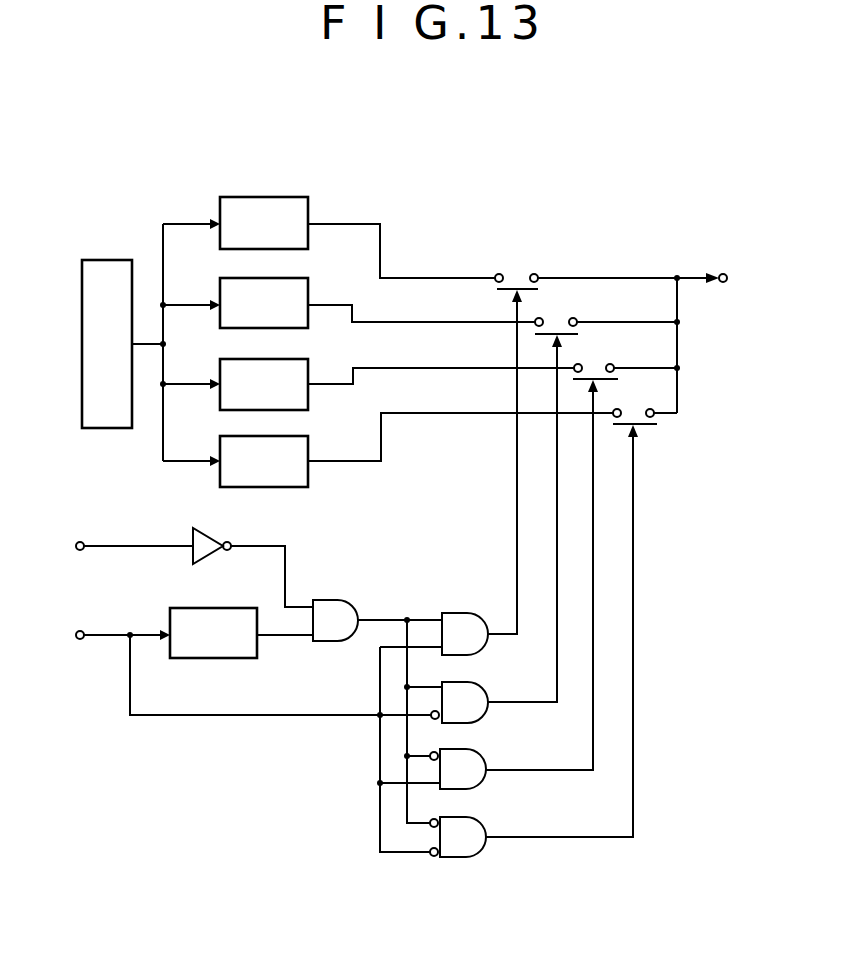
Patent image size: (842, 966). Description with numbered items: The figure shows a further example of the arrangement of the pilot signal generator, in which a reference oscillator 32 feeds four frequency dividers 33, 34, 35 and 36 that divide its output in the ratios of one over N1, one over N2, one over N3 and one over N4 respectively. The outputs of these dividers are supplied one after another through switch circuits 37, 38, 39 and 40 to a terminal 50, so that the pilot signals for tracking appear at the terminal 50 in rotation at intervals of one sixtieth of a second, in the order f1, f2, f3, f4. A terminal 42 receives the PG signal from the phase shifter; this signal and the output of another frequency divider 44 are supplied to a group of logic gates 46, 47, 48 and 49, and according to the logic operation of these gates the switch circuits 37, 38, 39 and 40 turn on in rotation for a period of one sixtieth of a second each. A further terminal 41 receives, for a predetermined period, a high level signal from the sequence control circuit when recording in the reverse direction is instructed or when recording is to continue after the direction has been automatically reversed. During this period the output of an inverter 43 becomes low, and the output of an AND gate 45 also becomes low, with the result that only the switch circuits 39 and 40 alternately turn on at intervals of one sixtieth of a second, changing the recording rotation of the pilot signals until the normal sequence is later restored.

The reference oscillator 32 is at (112, 258).
The frequency divider 33 is at (305, 212).
The frequency divider 34 is at (304, 296).
The frequency divider 35 is at (302, 382).
The frequency divider 36 is at (304, 460).
The switch circuit 37 is at (514, 278).
The switch circuit 38 is at (555, 320).
The switch circuit 39 is at (593, 366).
The switch circuit 40 is at (635, 410).
The terminal 41 is at (76, 545).
The terminal 42 is at (77, 638).
The inverter 43 is at (193, 530).
The frequency divider 44 is at (222, 607).
The AND gate 45 is at (345, 612).
The logic gate 46 is at (460, 626).
The logic gate 47 is at (473, 696).
The logic gate 48 is at (473, 763).
The logic gate 49 is at (473, 832).
The terminal 50 is at (728, 274).